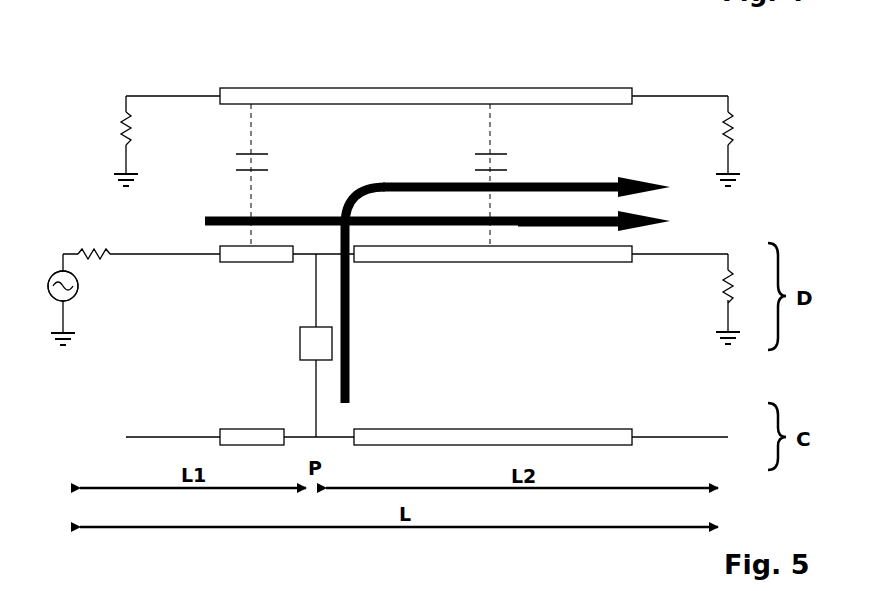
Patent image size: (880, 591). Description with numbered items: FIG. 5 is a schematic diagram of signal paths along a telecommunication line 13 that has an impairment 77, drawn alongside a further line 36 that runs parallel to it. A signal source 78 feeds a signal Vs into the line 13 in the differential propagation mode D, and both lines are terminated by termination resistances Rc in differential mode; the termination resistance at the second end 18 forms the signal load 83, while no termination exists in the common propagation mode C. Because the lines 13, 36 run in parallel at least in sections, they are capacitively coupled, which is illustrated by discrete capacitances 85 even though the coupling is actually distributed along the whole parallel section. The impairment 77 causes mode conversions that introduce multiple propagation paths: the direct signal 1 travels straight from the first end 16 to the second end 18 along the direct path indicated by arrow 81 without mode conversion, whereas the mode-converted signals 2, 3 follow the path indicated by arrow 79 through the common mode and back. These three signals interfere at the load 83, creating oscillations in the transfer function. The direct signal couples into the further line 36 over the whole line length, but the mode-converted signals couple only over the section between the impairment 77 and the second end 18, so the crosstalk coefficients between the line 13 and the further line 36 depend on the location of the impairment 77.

The further line 36 is at (90, 24).
The first end 16 is at (190, 78).
The second end 18 is at (654, 78).
The line 13 is at (62, 210).
The discrete capacitances 85 is at (258, 152).
The arrow 79 is at (436, 184).
The direct signal 1 is at (428, 221).
The mode-converted signal 2 is at (374, 295).
The mode-converted signal 3 is at (374, 295).
The arrow 81 is at (518, 224).
The signal source 78 is at (78, 286).
The impairment 77 is at (299, 344).
The signal load 83 is at (725, 285).